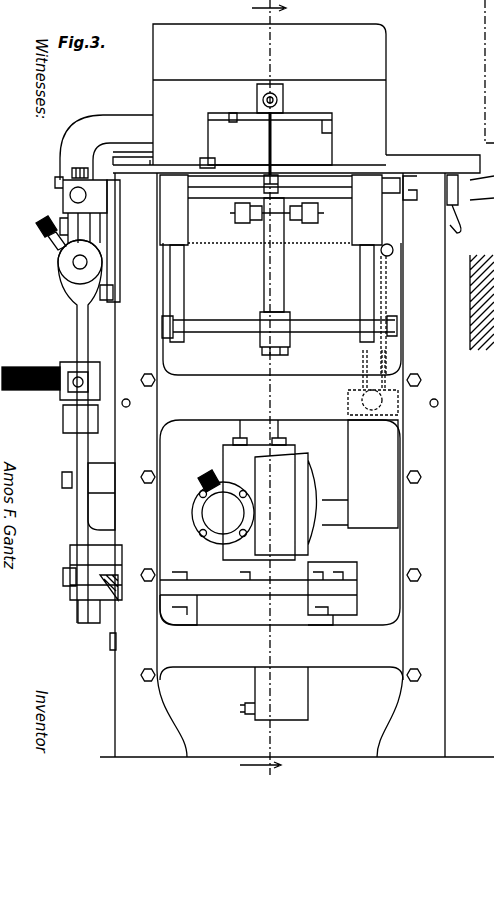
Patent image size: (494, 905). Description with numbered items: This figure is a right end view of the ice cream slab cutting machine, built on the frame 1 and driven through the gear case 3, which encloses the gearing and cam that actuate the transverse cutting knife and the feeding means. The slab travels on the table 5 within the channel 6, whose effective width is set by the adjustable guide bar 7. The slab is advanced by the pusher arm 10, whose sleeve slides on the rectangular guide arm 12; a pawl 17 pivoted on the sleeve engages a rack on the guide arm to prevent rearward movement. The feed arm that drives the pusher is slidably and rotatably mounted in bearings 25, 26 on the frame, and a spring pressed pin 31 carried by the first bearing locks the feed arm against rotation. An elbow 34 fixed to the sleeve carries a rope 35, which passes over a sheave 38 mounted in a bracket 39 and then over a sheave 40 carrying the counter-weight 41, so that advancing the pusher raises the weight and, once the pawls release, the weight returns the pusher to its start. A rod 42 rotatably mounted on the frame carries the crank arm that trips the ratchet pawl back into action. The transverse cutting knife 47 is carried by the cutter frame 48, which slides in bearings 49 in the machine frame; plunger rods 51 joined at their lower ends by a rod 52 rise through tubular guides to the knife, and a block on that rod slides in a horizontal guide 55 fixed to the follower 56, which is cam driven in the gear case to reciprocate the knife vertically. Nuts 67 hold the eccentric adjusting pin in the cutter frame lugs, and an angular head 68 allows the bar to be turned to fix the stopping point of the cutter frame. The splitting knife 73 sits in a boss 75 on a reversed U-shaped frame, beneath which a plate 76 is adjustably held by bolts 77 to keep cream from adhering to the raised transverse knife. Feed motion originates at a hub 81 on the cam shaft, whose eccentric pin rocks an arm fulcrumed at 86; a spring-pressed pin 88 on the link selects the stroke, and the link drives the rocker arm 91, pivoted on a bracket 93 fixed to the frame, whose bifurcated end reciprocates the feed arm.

The frame 1 is at (187, 703).
The gear case 3 is at (12, 243).
The table 5 is at (150, 168).
The channel 6 is at (318, 167).
The adjustable guide bar 7 is at (215, 165).
The pusher arm 10 is at (128, 126).
The rectangular guide arm 12 is at (72, 192).
The pawl 17 is at (80, 168).
The bearing 25 is at (57, 263).
The bearing 26 is at (112, 268).
The spring pressed pin 31 is at (42, 226).
The elbow 34 is at (88, 237).
The rope 35 is at (300, 245).
The sheave 38 is at (398, 256).
The bracket 39 is at (390, 250).
The sheave 40 is at (346, 402).
The counter-weight 41 is at (378, 520).
The rod 42 is at (432, 204).
The transverse cutting knife 47 is at (270, 139).
The cutter frame 48 is at (174, 210).
The bearings 49 is at (397, 178).
The plunger rods 51 is at (365, 300).
The rod 52 is at (330, 333).
The horizontal guide 55 is at (262, 338).
The follower 56 is at (278, 290).
The nuts 67 is at (300, 212).
The angular head 68 is at (255, 220).
The splitting knife 73 is at (261, 152).
The boss 75 is at (275, 97).
The plate 76 is at (333, 126).
The bolts 77 is at (322, 114).
The hub 81 is at (78, 605).
The fulcrum 86 is at (65, 497).
The spring-pressed pin 88 is at (45, 392).
The rocker arm 91 is at (78, 328).
The bracket 93 is at (106, 593).